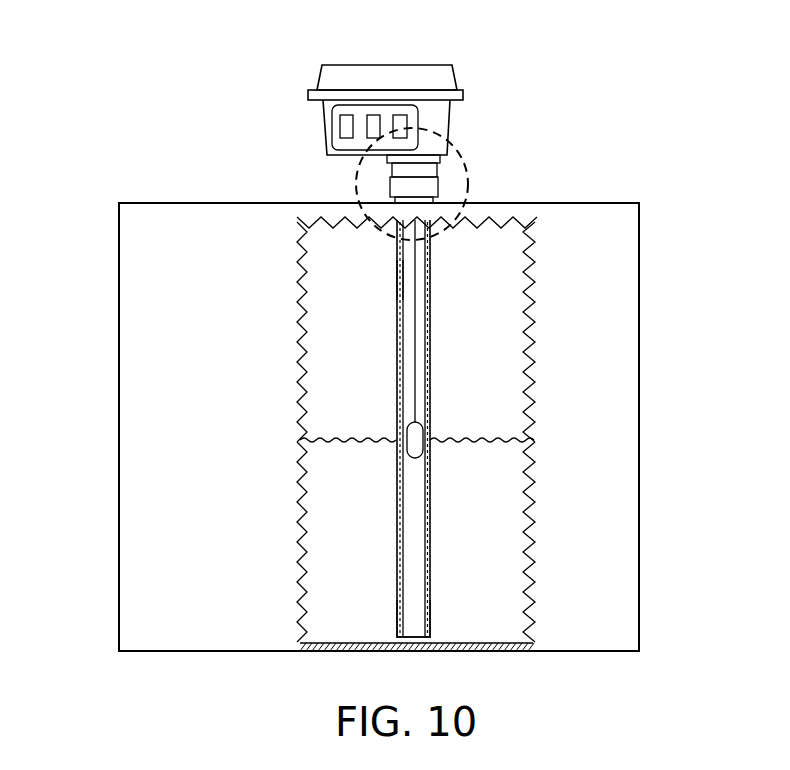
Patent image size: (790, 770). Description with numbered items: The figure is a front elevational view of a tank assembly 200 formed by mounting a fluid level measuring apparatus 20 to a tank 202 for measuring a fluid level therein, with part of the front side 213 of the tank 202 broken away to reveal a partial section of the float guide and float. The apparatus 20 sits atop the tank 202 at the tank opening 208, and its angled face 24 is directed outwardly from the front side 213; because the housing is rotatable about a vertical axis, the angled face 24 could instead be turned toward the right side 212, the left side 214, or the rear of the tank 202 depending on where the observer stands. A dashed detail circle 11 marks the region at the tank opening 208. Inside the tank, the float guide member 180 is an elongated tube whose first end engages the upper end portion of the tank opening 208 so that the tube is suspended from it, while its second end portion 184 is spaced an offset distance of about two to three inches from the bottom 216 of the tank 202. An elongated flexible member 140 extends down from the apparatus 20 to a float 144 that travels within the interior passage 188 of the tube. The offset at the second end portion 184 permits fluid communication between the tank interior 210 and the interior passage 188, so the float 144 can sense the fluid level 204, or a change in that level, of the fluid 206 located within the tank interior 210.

The tank assembly 200 is at (248, 99).
The fluid level measuring apparatus 20 is at (475, 66).
The angled face 24 is at (447, 117).
The detail circle 11 is at (465, 163).
The tank opening 208 is at (437, 200).
The tank 202 is at (233, 203).
The front side 213 is at (186, 288).
The left side 214 is at (119, 508).
The right side 212 is at (639, 502).
The tank interior 210 is at (372, 357).
The fluid 206 is at (373, 517).
The fluid level 204 is at (340, 440).
The bottom 216 is at (333, 643).
The float guide member 180 is at (432, 313).
The interior passage 188 is at (408, 278).
The second end portion 184 is at (432, 637).
The elongated flexible member 140 is at (415, 370).
The float 144 is at (417, 448).